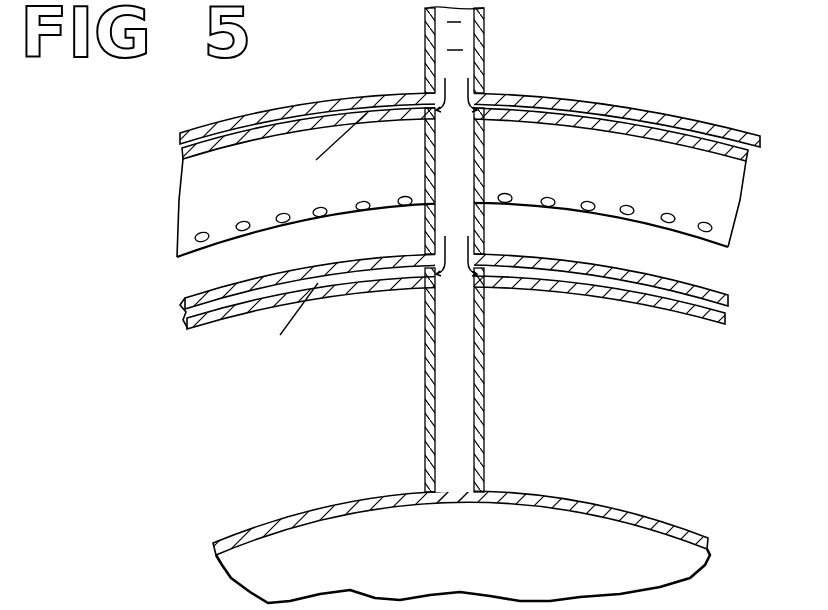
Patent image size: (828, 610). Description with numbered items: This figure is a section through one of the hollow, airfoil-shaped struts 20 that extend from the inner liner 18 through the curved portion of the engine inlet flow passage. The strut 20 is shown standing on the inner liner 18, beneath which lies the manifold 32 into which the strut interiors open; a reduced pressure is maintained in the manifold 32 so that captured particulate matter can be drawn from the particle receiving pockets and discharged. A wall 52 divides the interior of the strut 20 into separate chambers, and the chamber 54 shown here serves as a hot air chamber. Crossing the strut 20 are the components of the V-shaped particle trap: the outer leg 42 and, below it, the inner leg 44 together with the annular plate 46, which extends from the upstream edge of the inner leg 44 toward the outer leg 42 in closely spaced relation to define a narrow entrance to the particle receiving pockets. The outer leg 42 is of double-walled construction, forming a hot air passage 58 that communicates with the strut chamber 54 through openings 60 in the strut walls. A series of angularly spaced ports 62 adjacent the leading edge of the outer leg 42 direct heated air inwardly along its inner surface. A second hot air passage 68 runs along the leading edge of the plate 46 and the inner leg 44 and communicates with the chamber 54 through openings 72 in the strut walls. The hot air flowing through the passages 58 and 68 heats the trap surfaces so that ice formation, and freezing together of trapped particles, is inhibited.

The inner liner 18 is at (560, 495).
The strut 20 is at (484, 62).
The manifold 32 is at (417, 565).
The outer leg 42 is at (565, 93).
The inner leg 44 is at (677, 315).
The annular plate 46 is at (667, 278).
The wall 52 is at (457, 492).
The strut chamber 54 is at (454, 36).
The hot air passage 58 is at (596, 150).
The openings 60 is at (440, 113).
The ports 62 is at (669, 214).
The hot air passage 68 is at (625, 285).
The openings 72 is at (435, 265).